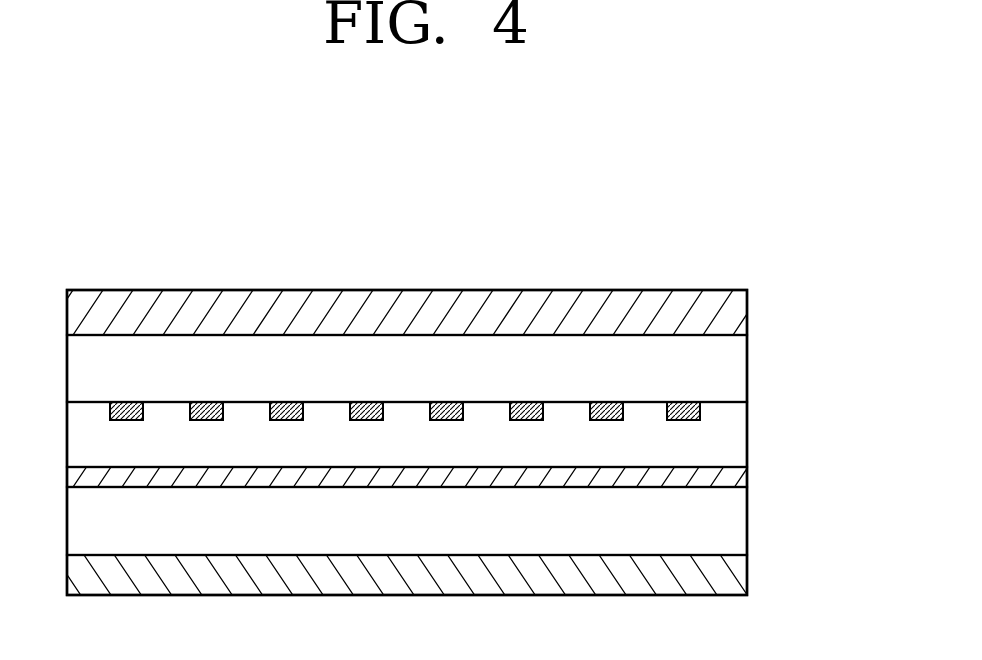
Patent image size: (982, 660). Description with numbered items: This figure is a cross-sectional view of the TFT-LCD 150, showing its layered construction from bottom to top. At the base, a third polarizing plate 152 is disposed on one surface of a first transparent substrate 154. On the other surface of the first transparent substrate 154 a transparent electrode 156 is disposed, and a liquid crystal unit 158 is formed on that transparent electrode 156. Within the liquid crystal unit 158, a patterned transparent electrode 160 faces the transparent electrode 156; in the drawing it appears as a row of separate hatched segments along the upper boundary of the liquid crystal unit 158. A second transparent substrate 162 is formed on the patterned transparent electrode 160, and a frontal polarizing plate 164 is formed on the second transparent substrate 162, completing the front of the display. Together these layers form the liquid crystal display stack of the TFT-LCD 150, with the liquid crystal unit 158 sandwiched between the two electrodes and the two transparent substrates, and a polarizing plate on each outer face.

The TFT-LCD 150 is at (862, 223).
The third polarizing plate 152 is at (733, 575).
The first transparent substrate 154 is at (733, 525).
The transparent electrode 156 is at (733, 482).
The liquid crystal unit 158 is at (733, 445).
The patterned transparent electrode 160 is at (700, 416).
The second transparent substrate 162 is at (733, 370).
The frontal polarizing plate 164 is at (733, 313).